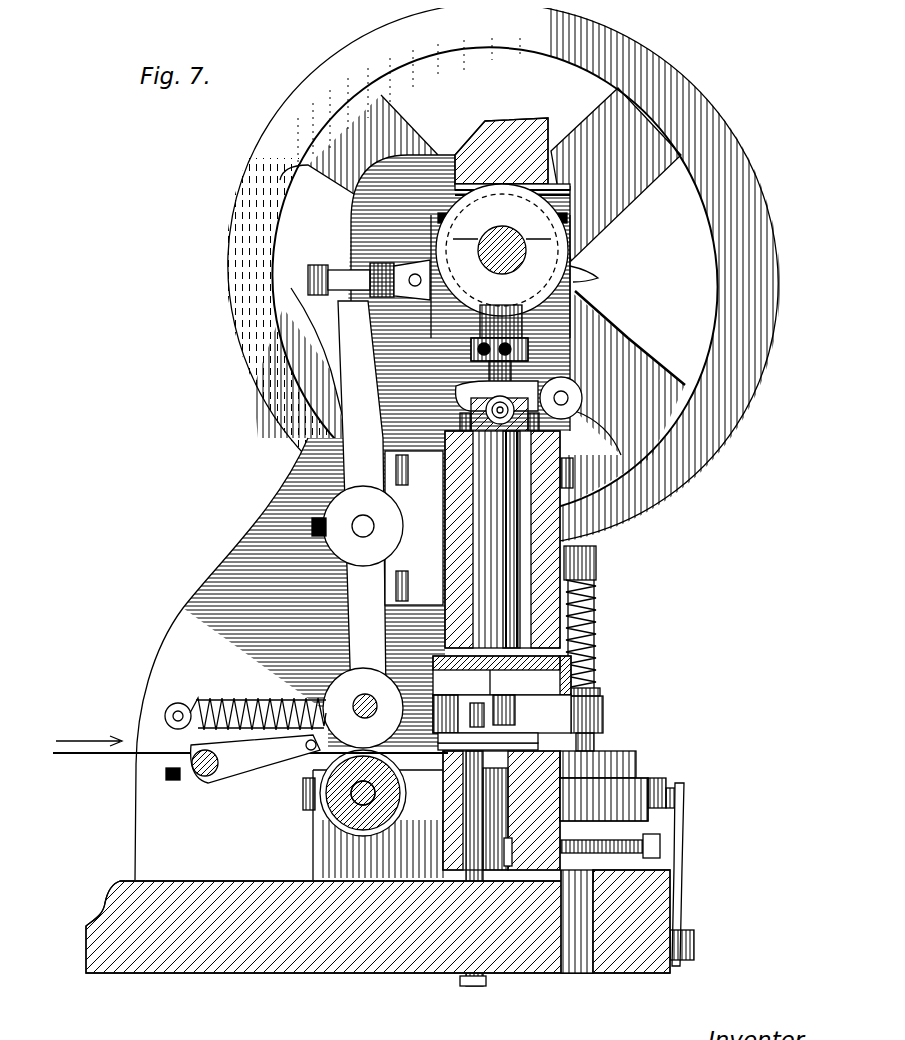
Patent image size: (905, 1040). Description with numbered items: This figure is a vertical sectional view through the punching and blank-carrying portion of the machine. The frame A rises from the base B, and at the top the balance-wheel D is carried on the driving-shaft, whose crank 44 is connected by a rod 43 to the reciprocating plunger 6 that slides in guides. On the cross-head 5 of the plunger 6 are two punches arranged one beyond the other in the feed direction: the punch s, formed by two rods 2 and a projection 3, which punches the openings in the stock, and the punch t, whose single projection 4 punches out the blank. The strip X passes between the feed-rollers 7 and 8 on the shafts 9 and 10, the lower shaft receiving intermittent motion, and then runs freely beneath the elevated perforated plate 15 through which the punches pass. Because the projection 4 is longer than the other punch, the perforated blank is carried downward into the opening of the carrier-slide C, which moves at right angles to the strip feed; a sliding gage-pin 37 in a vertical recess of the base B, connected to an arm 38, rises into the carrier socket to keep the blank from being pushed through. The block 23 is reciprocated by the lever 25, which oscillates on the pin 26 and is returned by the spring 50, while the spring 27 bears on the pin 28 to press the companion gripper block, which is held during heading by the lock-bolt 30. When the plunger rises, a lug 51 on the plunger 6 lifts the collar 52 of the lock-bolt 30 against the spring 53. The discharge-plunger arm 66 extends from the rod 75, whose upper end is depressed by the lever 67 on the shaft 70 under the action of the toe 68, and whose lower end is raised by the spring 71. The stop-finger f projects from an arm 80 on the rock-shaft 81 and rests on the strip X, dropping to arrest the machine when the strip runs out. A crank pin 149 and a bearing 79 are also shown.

The balance-wheel D is at (764, 292).
The frame A is at (352, 499).
The base B is at (246, 960).
The carrier-slide C is at (551, 810).
The strip X is at (250, 760).
The stop-finger f is at (290, 752).
The punch s is at (460, 681).
The punch t is at (524, 681).
The rods 2 is at (502, 714).
The projection 3 is at (477, 715).
The projection 4 is at (507, 705).
The cross-head 5 is at (502, 675).
The plunger 6 is at (502, 539).
The feed-roller 7 is at (363, 708).
The feed-roller 8 is at (363, 793).
The shaft 9 is at (363, 690).
The shaft 10 is at (367, 785).
The perforated plate 15 is at (528, 740).
The block 23 is at (298, 805).
The lever 25 is at (362, 499).
The pin 26 is at (368, 518).
The spring 27 is at (675, 862).
The pin 28 is at (665, 778).
The lock-bolt 30 is at (586, 733).
The gage-pin 37 is at (502, 816).
The arm 38 is at (505, 845).
The rod 43 is at (499, 351).
The crank 44 is at (496, 228).
The spring 50 is at (255, 690).
The lug 51 is at (595, 712).
The collar 52 is at (590, 678).
The spring 53 is at (590, 596).
The arm 66 is at (430, 730).
The lever 67 is at (460, 384).
The toe 68 is at (590, 272).
The shaft 70 is at (560, 390).
The spring 71 is at (470, 980).
The rod 75 is at (450, 412).
The bearing 79 is at (407, 846).
The arm 80 is at (244, 762).
The rock-shaft 81 is at (192, 770).
The crank pin 149 is at (440, 248).